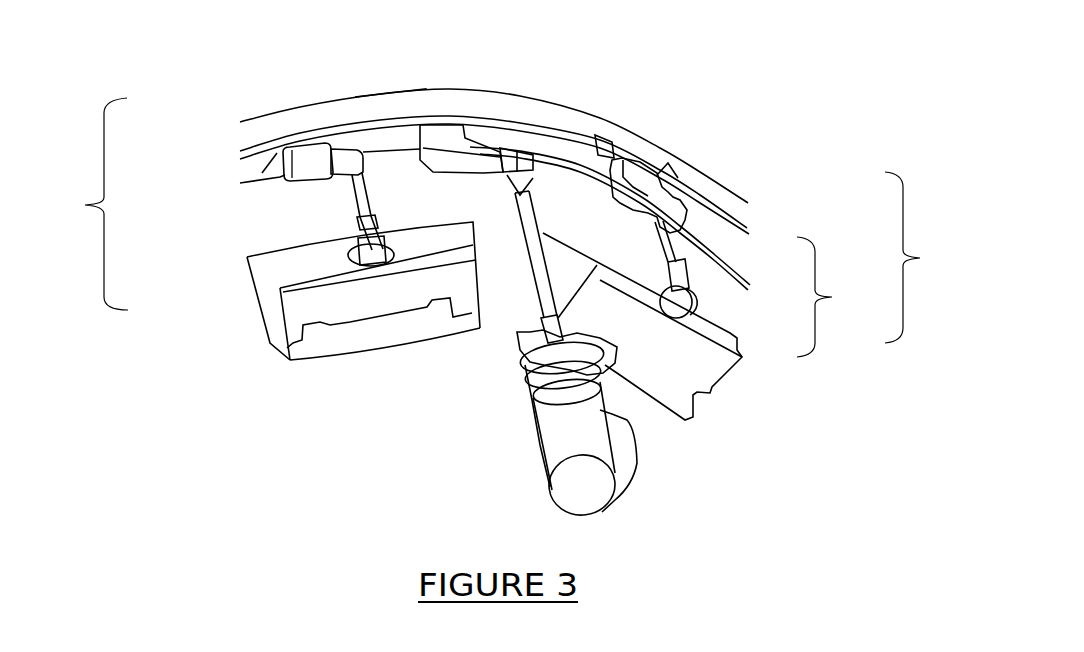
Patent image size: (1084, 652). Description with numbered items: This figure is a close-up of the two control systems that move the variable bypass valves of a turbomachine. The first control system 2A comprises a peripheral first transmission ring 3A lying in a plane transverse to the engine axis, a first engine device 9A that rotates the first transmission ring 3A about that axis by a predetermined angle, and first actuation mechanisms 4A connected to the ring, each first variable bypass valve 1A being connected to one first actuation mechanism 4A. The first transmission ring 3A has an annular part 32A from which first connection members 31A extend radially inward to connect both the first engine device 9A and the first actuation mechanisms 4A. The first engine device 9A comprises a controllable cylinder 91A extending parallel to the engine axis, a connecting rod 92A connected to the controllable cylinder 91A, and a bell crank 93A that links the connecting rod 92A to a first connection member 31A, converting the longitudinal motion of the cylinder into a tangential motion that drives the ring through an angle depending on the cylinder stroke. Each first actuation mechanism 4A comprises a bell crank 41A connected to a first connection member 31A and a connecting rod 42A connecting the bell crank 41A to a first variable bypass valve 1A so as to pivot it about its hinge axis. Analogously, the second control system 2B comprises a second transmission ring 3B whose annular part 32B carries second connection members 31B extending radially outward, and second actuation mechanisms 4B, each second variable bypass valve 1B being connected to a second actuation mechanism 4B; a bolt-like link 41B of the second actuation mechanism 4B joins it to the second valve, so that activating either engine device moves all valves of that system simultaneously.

The first variable bypass valve 1A is at (713, 390).
The second variable bypass valve 1B is at (397, 325).
The first control system 2A is at (922, 257).
The second control system 2B is at (85, 204).
The first transmission ring 3A is at (750, 207).
The second transmission ring 3B is at (236, 161).
The first connection member 31A is at (405, 125).
The annular part 32A is at (372, 113).
The second connection member 31B is at (323, 143).
The annular part 32B is at (380, 143).
The first actuation mechanism 4A is at (833, 297).
The bell crank 41A is at (675, 212).
The connecting rod 42A is at (692, 256).
The second actuation mechanism 4B is at (183, 223).
The second bolt 41B is at (283, 185).
The first engine device 9A is at (581, 470).
The controllable cylinder 91A is at (550, 443).
The connecting rod 92A is at (529, 243).
The bell crank 93A is at (450, 148).